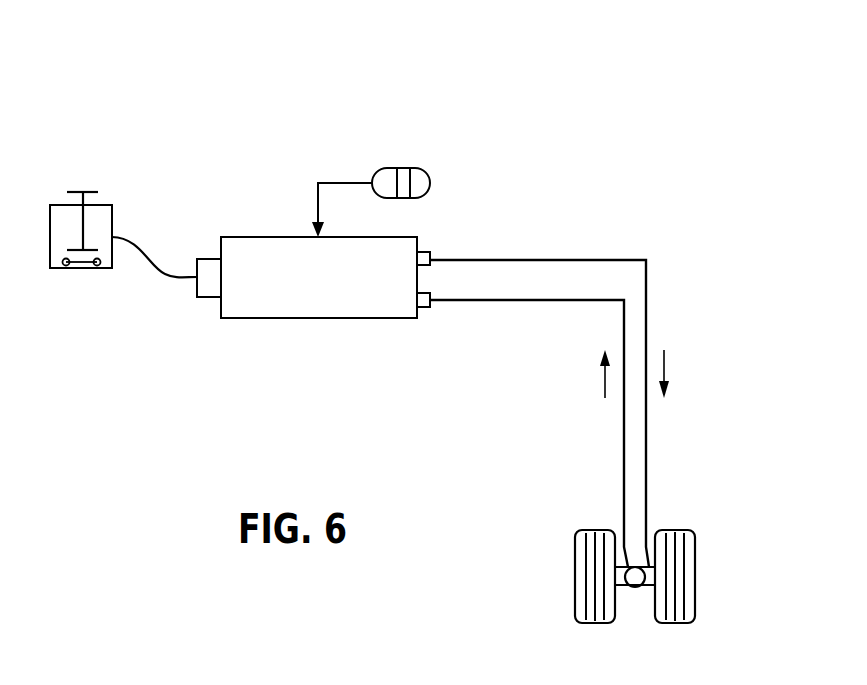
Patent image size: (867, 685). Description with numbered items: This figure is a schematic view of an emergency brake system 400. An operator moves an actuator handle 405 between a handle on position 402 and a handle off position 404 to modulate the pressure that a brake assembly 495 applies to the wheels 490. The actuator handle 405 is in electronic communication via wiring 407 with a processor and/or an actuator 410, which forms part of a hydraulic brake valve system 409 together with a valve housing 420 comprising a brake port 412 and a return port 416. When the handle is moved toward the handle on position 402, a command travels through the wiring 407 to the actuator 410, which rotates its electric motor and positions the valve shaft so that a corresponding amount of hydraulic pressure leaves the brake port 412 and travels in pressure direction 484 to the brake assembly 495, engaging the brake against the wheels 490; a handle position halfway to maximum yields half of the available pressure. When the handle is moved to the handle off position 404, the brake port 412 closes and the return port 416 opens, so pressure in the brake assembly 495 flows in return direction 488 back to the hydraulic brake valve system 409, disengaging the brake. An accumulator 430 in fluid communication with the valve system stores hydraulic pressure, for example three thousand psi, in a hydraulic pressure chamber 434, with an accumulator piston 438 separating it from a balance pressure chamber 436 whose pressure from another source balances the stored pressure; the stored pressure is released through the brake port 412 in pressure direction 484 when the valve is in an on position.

The emergency brake system 400 is at (300, 80).
The handle on position 402 is at (97, 268).
The handle off position 404 is at (64, 268).
The actuator handle 405 is at (84, 220).
The wiring 407 is at (155, 261).
The hydraulic brake valve system 409 is at (254, 195).
The actuator 410 is at (200, 298).
The brake port 412 is at (427, 263).
The return port 416 is at (424, 308).
The valve housing 420 is at (240, 319).
The accumulator 430 is at (410, 136).
The hydraulic pressure chamber 434 is at (383, 188).
The balance pressure chamber 436 is at (423, 187).
The accumulator piston 438 is at (405, 172).
The pressure direction 484 is at (667, 384).
The return direction 488 is at (605, 365).
The wheel 490 is at (575, 553).
The brake assembly 495 is at (670, 505).